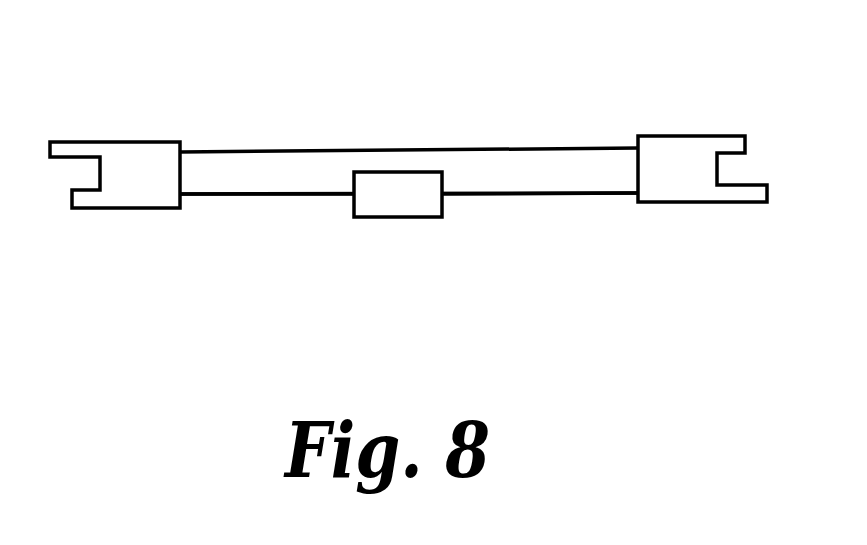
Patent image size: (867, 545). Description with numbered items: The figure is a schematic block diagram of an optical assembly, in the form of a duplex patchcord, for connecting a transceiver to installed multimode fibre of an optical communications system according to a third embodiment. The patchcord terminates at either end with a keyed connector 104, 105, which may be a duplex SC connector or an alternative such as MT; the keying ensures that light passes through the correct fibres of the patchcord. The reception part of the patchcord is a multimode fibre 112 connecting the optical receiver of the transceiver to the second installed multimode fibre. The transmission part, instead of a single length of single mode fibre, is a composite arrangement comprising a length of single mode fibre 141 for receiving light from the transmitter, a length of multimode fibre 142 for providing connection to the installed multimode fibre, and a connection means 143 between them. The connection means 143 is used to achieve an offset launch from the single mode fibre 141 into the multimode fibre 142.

The keyed connector 104 is at (106, 123).
The keyed connector 105 is at (683, 108).
The multimode fibre 112 is at (350, 134).
The single mode fibre 141 is at (199, 216).
The multimode fibre 142 is at (594, 215).
The connection means 143 is at (376, 239).